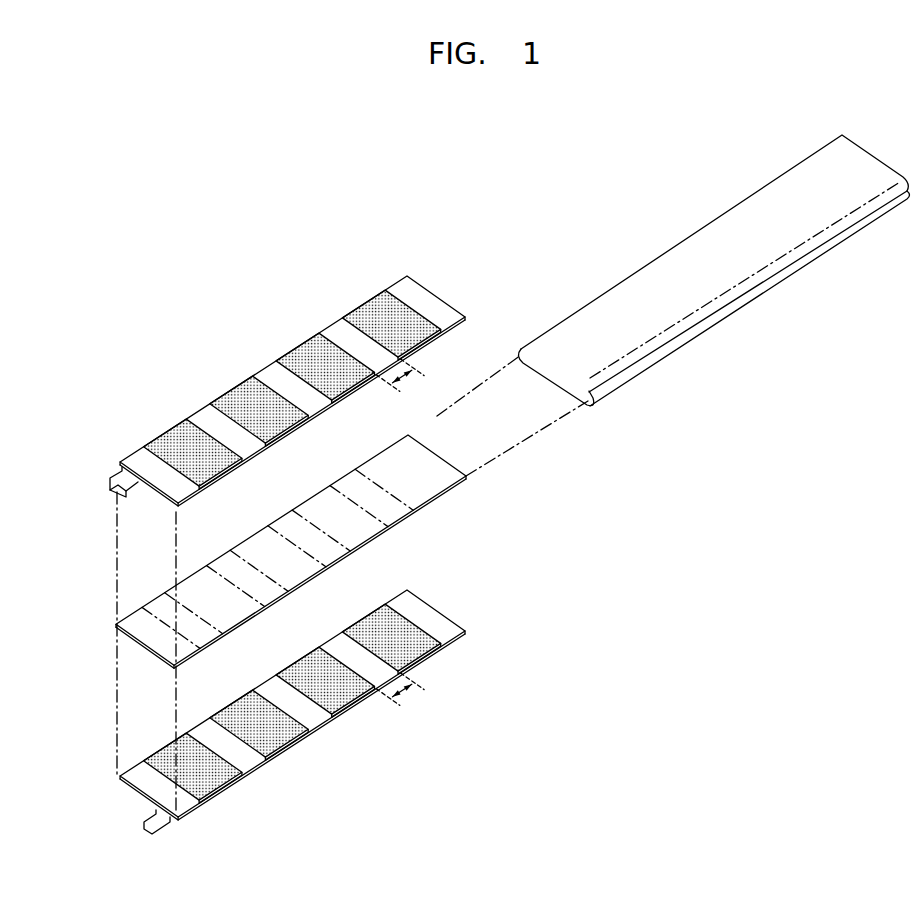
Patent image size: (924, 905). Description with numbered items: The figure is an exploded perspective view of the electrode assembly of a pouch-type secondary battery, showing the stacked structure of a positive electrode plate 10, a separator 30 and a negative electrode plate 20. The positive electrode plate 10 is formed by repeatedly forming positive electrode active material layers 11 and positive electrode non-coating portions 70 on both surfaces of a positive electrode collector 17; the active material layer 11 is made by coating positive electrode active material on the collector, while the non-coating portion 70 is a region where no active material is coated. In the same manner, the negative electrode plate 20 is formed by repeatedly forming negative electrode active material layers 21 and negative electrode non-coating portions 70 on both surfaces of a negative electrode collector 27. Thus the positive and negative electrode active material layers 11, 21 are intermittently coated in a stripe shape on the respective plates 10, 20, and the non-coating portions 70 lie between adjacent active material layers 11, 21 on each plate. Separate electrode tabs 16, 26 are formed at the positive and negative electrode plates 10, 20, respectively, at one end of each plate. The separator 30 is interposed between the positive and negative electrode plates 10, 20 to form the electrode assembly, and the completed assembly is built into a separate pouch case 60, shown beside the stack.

The positive electrode plate 10 is at (267, 373).
The positive electrode active material layer 11 is at (326, 350).
The electrode tab 16 is at (107, 487).
The positive electrode collector 17 is at (427, 300).
The negative electrode plate 20 is at (286, 703).
The negative electrode active material layer 21 is at (368, 623).
The electrode tab 26 is at (138, 823).
The negative electrode collector 27 is at (432, 618).
The separator 30 is at (458, 514).
The pouch case 60 is at (662, 218).
The non-coating portion 70 is at (414, 373).